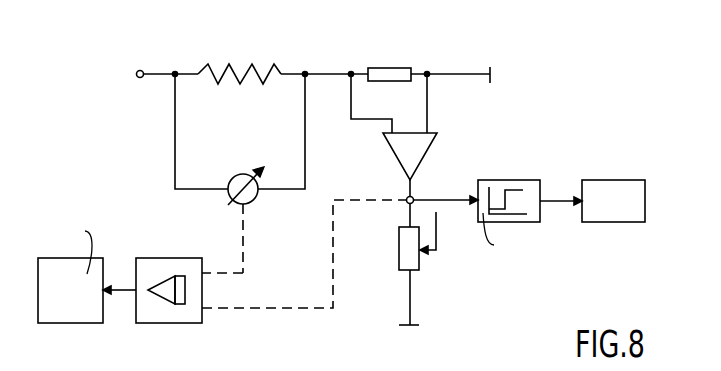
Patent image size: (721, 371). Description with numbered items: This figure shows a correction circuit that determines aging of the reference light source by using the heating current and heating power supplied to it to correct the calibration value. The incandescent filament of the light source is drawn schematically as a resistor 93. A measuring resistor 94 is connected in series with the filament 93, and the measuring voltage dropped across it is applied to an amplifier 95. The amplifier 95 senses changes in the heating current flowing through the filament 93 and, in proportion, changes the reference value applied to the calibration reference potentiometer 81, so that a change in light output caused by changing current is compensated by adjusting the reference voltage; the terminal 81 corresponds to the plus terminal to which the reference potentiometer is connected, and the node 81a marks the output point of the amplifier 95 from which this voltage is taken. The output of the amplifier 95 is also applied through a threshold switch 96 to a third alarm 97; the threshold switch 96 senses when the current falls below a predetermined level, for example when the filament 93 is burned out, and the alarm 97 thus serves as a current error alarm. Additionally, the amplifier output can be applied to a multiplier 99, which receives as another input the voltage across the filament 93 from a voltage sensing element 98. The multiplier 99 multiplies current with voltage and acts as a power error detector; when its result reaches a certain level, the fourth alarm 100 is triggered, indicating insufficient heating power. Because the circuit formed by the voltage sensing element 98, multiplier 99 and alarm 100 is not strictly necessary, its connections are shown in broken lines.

The incandescent filament 93 is at (237, 70).
The measuring resistor 94 is at (384, 75).
The amplifier 95 is at (417, 150).
The threshold switch 96 is at (510, 185).
The third alarm 97 is at (605, 190).
The voltage sensing element 98 is at (233, 190).
The multiplier 99 is at (158, 315).
The fourth alarm 100 is at (62, 315).
The calibration reference potentiometer 81 is at (405, 250).
The junction node 81a is at (414, 196).